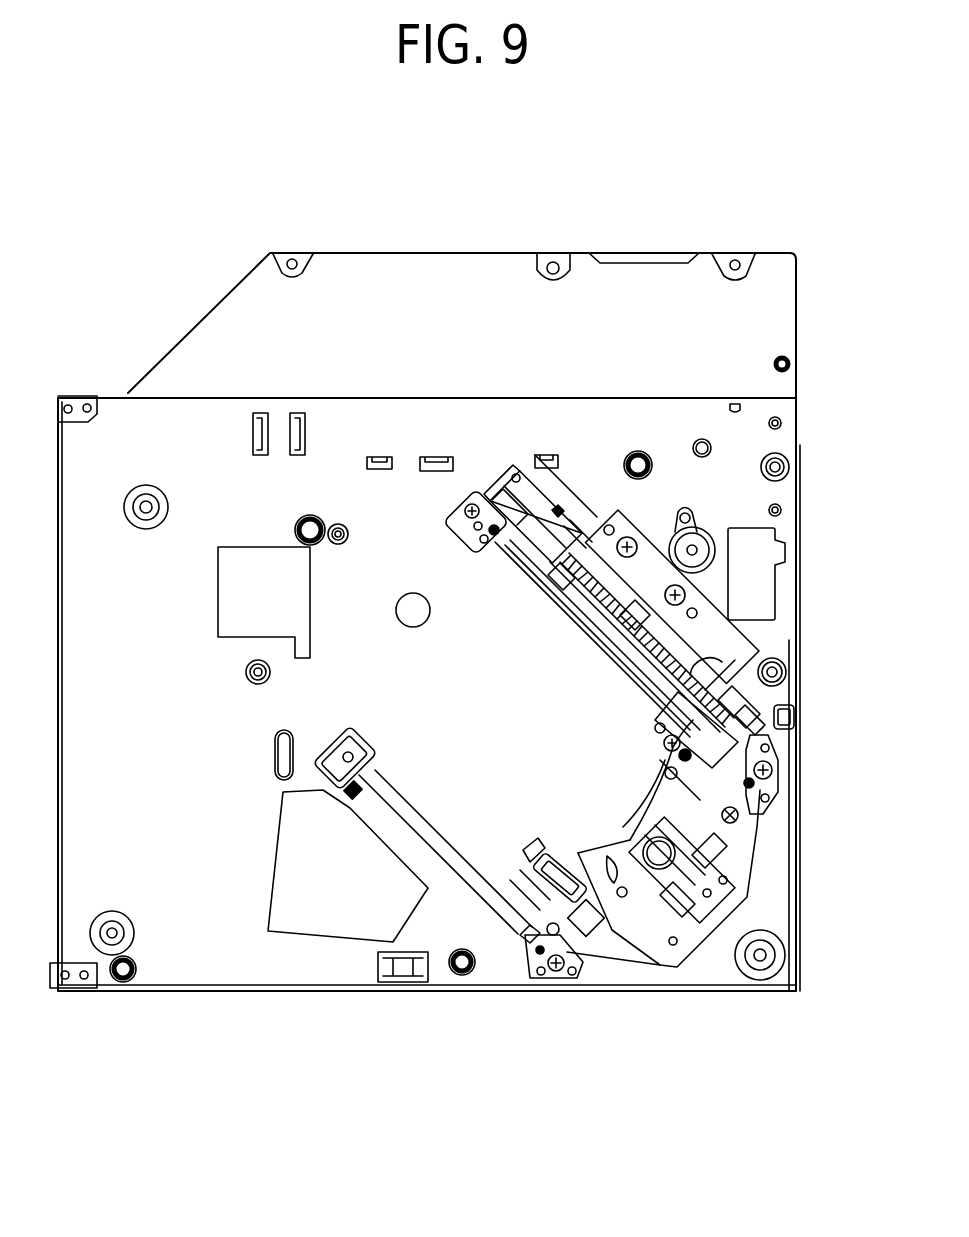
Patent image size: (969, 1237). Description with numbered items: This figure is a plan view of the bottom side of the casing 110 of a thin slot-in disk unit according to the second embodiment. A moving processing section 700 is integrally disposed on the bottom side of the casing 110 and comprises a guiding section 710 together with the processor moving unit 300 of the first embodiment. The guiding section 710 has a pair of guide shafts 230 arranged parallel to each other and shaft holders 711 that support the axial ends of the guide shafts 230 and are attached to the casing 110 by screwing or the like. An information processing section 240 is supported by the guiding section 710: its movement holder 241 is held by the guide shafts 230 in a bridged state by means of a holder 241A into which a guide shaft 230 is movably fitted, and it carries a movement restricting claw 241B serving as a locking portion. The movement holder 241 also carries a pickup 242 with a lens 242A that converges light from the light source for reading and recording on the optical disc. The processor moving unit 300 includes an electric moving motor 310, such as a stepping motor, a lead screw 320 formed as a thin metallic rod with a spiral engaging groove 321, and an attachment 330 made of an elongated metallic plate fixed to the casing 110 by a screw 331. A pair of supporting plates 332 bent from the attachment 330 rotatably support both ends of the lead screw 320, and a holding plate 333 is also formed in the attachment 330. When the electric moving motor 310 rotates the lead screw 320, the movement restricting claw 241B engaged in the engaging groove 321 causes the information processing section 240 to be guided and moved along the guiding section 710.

The casing 110 is at (781, 253).
The moving processing section 700 is at (424, 517).
The guiding section 710 is at (459, 532).
The shaft holder 711 is at (478, 548).
The processor moving unit 300 is at (573, 492).
The electric moving motor 310 is at (520, 488).
The lead screw 320 is at (572, 560).
The engaging groove 321 is at (700, 663).
The attachment 330 is at (648, 553).
The screw 331 is at (627, 560).
The supporting plate 332 is at (550, 570).
The holding plate 333 is at (497, 500).
The guide shaft 230 is at (588, 622).
The information processing section 240 is at (753, 867).
The movement holder 241 is at (558, 862).
The holder 241A is at (647, 718).
The movement restricting claw 241B is at (753, 713).
The pickup 242 is at (637, 828).
The lens 242A is at (645, 808).